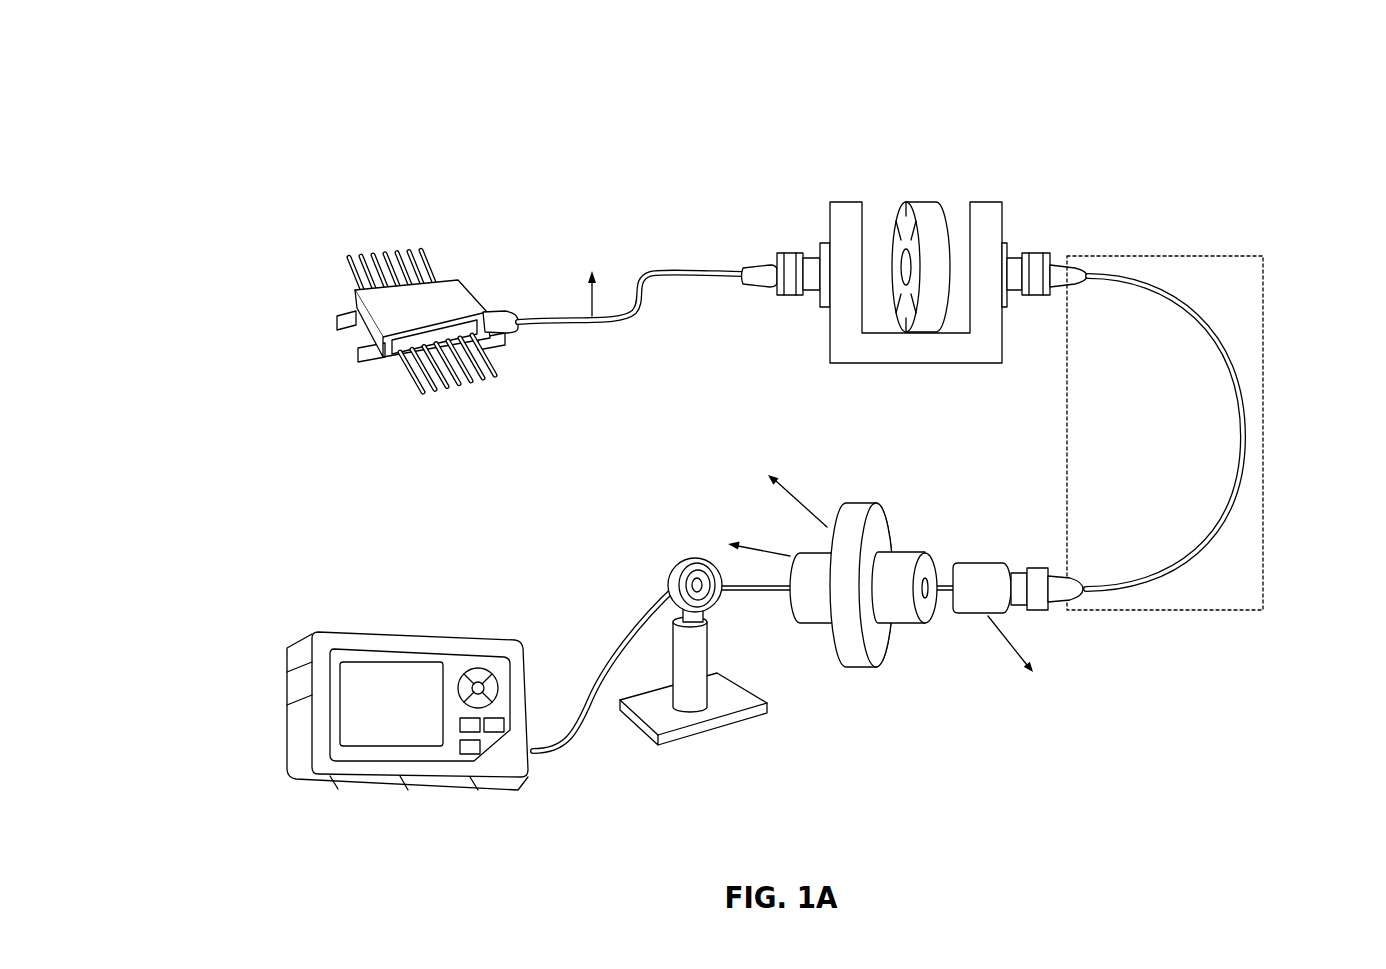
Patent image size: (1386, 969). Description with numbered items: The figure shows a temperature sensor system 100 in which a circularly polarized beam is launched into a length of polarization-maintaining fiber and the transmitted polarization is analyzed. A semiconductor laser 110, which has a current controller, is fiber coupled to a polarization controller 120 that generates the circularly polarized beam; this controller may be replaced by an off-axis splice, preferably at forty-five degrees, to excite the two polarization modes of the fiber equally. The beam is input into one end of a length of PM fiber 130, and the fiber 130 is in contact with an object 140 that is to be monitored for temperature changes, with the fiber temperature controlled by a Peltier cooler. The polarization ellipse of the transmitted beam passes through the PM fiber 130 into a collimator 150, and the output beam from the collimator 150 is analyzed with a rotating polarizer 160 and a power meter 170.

The temperature sensor system 100 is at (374, 74).
The semiconductor laser 110 is at (448, 303).
The polarization controller 120 is at (1003, 223).
The PM fiber 130 is at (1221, 357).
The object 140 is at (1266, 503).
The collimator 150 is at (985, 573).
The rotating polarizer 160 is at (808, 620).
The power meter 170 is at (289, 687).